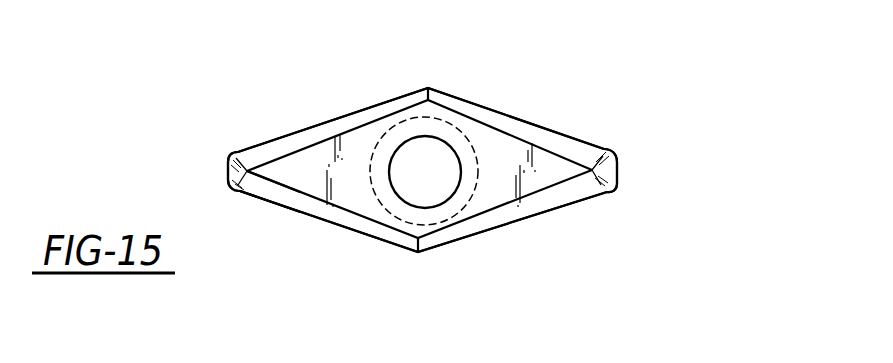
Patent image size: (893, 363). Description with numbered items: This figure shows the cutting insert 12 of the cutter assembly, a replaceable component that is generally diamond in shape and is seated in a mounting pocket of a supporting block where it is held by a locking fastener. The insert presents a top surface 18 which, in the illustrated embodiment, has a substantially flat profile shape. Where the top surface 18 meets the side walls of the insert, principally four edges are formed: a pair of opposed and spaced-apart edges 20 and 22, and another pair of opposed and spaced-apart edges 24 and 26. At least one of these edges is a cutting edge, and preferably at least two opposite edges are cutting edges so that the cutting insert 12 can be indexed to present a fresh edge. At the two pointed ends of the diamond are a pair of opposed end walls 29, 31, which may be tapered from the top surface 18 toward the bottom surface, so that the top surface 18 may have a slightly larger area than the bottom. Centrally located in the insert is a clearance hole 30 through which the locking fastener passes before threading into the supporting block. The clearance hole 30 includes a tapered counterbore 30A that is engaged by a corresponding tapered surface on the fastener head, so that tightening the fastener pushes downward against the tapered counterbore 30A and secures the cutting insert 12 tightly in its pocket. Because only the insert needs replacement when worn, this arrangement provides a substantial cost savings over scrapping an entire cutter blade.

The cutting insert 12 is at (296, 106).
The edge 24 is at (343, 117).
The edge 22 is at (565, 135).
The clearance hole 30 is at (425, 160).
The tapered counterbore 30A is at (467, 137).
The end wall 29 is at (618, 173).
The end wall 31 is at (227, 172).
The top surface 18 is at (248, 197).
The edge 20 is at (322, 218).
The edge 26 is at (523, 220).